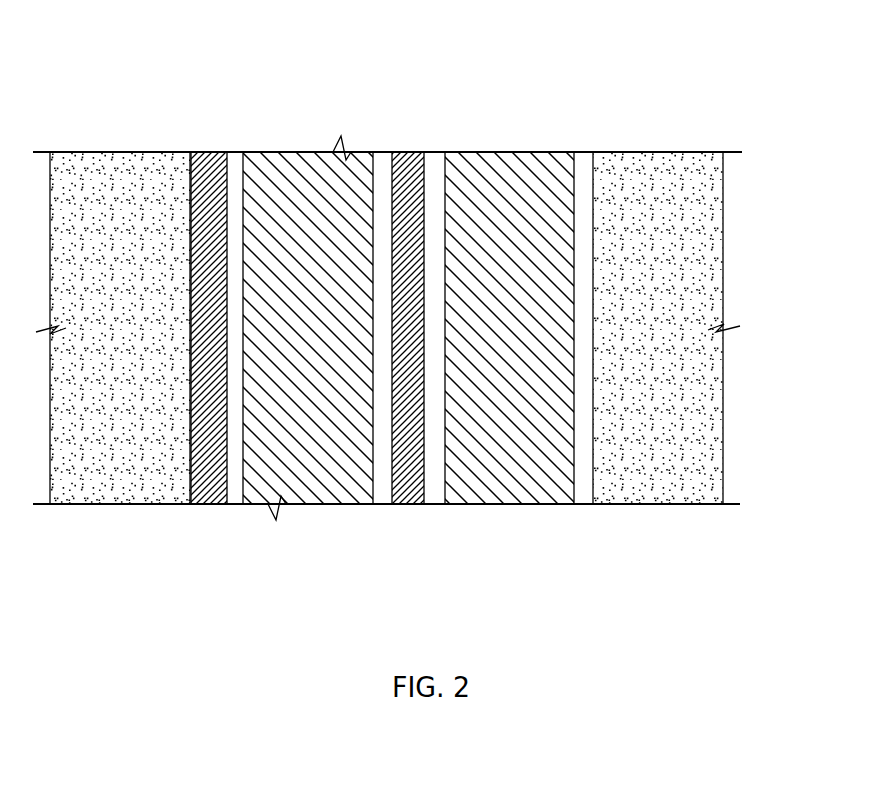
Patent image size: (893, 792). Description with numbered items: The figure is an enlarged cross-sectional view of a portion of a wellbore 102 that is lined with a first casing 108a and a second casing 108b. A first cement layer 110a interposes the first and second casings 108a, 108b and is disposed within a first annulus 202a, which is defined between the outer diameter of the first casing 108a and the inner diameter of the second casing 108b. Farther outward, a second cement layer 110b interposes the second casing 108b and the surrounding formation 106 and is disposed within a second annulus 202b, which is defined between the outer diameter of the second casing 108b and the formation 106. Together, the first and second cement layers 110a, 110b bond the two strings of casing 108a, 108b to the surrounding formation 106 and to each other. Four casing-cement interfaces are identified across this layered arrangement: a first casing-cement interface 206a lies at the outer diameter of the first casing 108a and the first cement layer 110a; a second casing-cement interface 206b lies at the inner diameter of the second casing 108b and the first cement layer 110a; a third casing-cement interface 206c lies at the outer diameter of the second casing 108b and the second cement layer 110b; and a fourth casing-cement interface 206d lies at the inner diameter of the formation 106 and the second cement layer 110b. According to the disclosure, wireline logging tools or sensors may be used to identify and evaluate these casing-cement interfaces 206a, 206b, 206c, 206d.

The wellbore 102 is at (411, 46).
The formation 106 is at (673, 252).
The first casing 108a is at (203, 505).
The second casing 108b is at (408, 505).
The first cement layer 110a is at (332, 252).
The second cement layer 110b is at (533, 252).
The first annulus 202a is at (392, 110).
The second annulus 202b is at (592, 542).
The first casing-cement interface 206a is at (233, 146).
The second casing-cement interface 206b is at (383, 146).
The third casing-cement interface 206c is at (436, 161).
The fourth casing-cement interface 206d is at (583, 146).